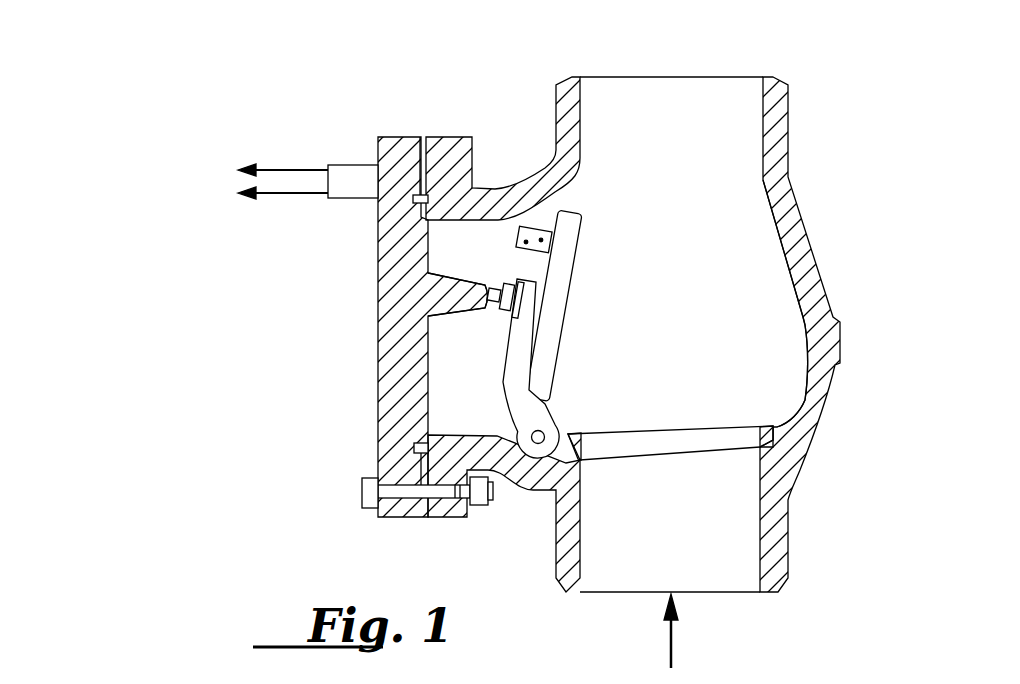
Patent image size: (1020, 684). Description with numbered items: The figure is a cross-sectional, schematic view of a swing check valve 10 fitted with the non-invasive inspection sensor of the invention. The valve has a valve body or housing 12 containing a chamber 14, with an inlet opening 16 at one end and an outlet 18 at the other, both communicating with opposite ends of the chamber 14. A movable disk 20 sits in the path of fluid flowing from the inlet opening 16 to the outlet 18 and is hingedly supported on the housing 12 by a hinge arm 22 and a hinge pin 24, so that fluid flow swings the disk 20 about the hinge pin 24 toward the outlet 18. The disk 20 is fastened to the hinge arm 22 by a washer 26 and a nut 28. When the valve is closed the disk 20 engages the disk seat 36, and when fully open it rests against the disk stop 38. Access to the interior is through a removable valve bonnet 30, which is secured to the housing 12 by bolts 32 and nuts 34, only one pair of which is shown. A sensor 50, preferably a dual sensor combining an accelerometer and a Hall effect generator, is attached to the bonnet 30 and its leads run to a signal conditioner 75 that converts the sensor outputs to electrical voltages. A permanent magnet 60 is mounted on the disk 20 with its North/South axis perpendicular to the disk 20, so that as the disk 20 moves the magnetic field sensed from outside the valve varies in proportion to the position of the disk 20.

The swing check valve 10 is at (481, 337).
The valve body 12 is at (815, 260).
The chamber 14 is at (783, 334).
The inlet opening 16 is at (727, 565).
The outlet 18 is at (720, 105).
The disk 20 is at (555, 325).
The hinge arm 22 is at (505, 387).
The hinge pin 24 is at (539, 446).
The washer 26 is at (527, 286).
The nut 28 is at (507, 305).
The valve bonnet 30 is at (397, 137).
The bolt 32 is at (362, 494).
The nut 34 is at (480, 510).
The disk seat 36 is at (760, 440).
The disk stop 38 is at (478, 295).
The dual sensor 50 is at (353, 172).
The permanent magnet 60 is at (538, 246).
The signal conditioner 75 is at (190, 181).